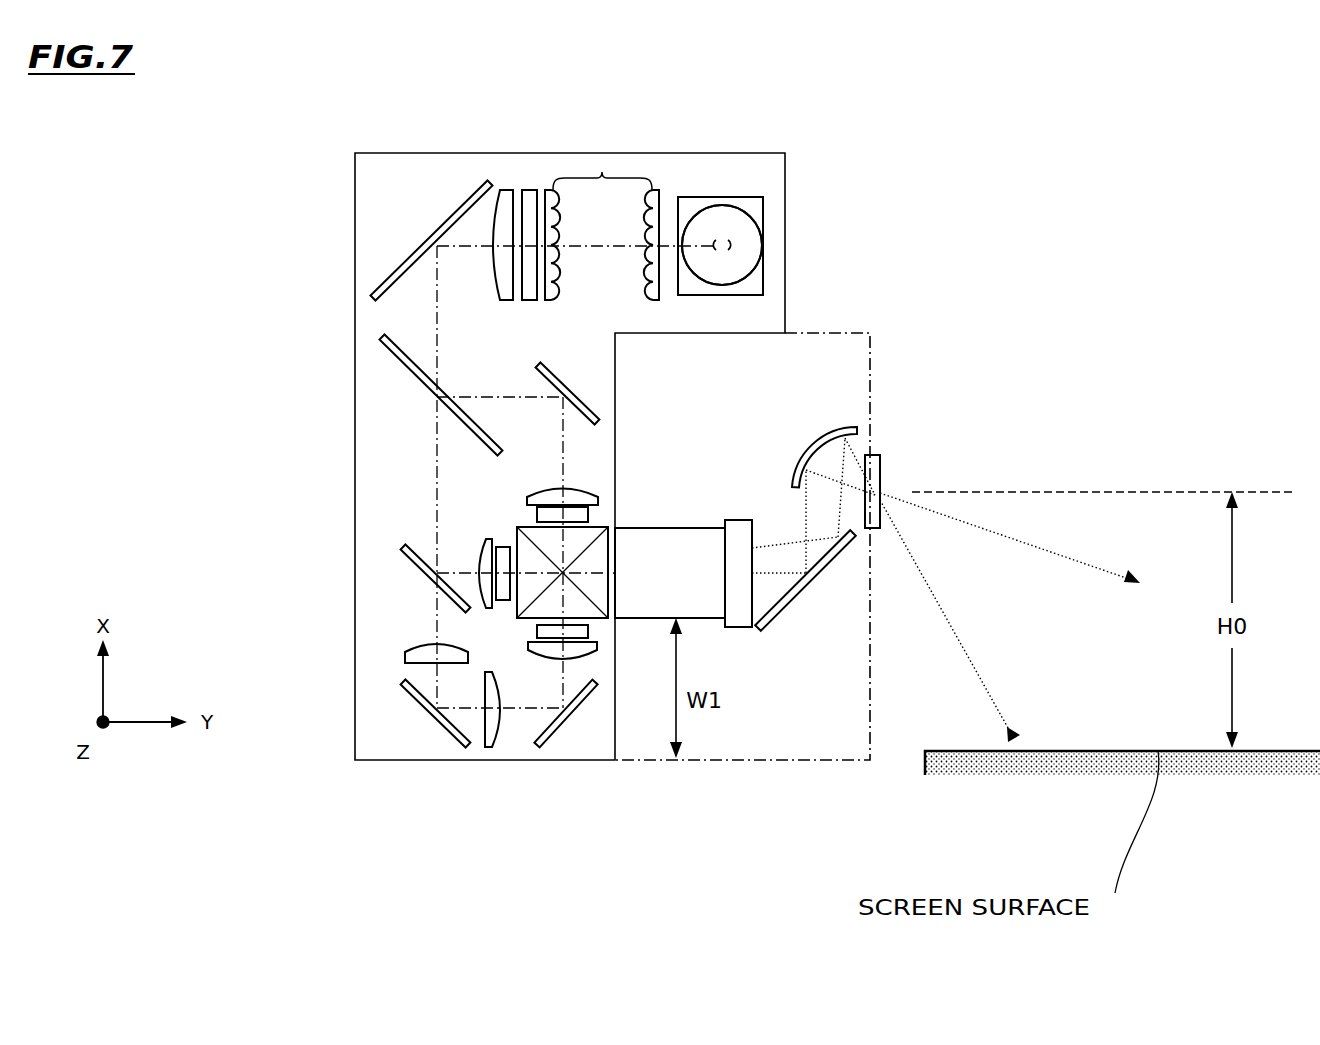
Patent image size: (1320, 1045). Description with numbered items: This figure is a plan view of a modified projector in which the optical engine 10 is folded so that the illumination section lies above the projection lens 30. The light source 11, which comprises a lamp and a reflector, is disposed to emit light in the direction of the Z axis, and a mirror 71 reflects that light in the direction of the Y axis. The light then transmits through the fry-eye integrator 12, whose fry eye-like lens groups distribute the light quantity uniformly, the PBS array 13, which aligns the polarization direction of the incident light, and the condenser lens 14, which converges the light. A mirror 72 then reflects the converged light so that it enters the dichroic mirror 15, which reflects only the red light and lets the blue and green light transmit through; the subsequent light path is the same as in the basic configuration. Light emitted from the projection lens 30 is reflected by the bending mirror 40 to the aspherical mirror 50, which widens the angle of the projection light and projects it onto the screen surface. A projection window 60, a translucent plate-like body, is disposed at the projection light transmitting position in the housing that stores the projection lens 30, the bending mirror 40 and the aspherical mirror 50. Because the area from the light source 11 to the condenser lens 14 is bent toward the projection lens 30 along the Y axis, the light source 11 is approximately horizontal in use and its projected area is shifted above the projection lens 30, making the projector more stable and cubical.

The optical engine 10 is at (355, 375).
The light source 11 is at (748, 224).
The mirror 71 is at (758, 277).
The fry-eye integrator 12 is at (602, 172).
The PBS array 13 is at (532, 183).
The condenser lens 14 is at (508, 183).
The dichroic mirror 15 is at (418, 362).
The mirror 72 is at (440, 223).
The projection lens 30 is at (650, 542).
The bending mirror 40 is at (773, 620).
The aspherical mirror 50 is at (812, 442).
The projection window 60 is at (884, 462).